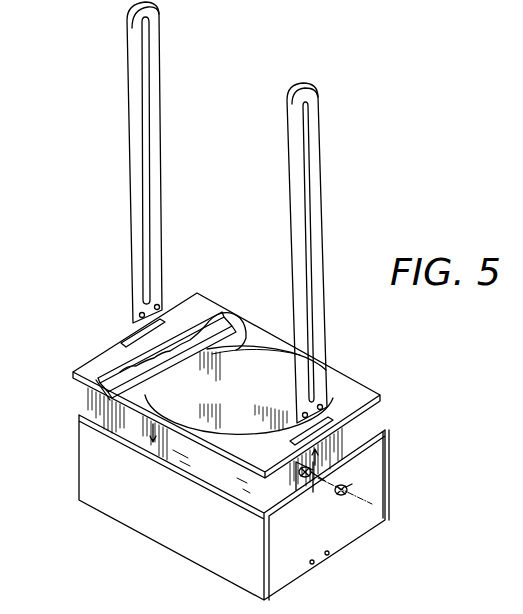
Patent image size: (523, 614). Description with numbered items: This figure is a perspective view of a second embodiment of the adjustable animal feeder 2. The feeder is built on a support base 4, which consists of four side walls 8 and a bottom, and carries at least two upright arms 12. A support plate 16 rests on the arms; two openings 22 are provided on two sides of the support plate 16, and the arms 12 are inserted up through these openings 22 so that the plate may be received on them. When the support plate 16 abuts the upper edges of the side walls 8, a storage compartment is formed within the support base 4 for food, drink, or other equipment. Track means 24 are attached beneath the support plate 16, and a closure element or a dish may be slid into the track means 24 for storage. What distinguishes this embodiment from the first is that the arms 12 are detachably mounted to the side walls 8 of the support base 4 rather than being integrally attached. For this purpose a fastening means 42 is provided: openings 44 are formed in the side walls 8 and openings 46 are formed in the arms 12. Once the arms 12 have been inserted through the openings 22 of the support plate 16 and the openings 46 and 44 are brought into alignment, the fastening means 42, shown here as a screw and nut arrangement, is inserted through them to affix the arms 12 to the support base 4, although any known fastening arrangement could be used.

The adjustable animal feeder 2 is at (86, 210).
The support base 4 is at (141, 539).
The side walls 8 is at (92, 414).
The arms 12 is at (135, 128).
The support plate 16 is at (345, 390).
The openings 22 is at (122, 341).
The track means 24 is at (108, 390).
The fastening means 42 is at (346, 484).
The openings 44 is at (327, 556).
The openings 46 is at (140, 312).